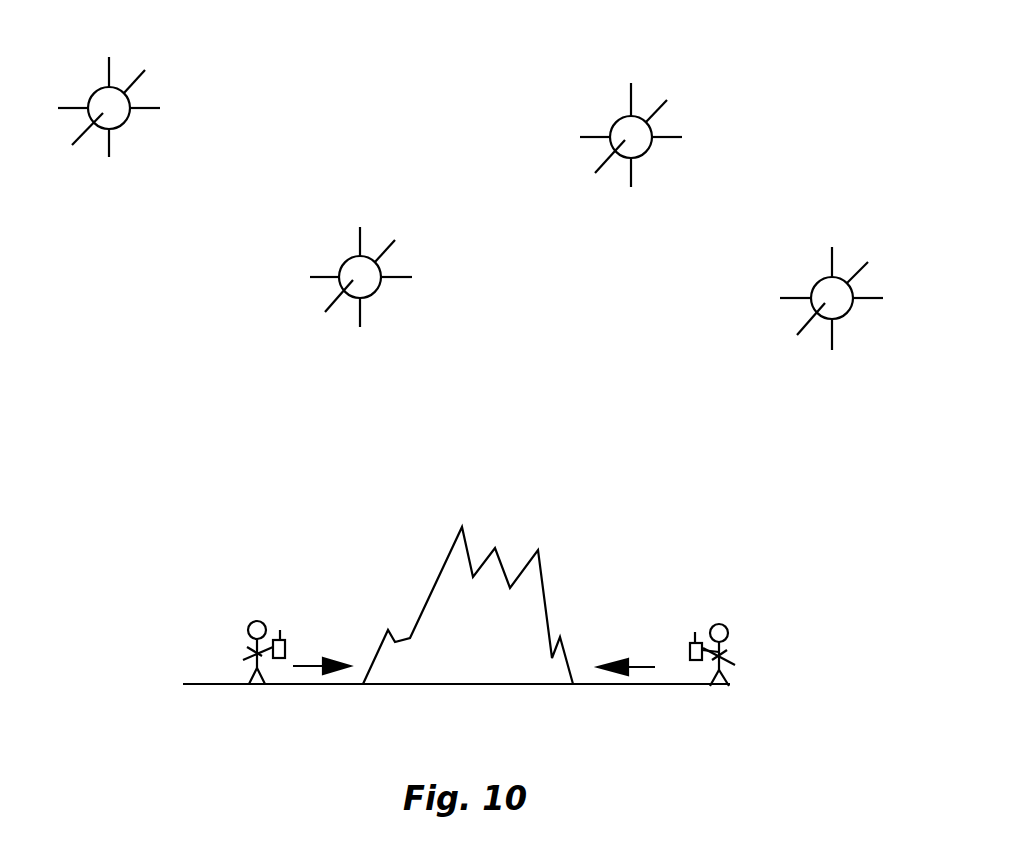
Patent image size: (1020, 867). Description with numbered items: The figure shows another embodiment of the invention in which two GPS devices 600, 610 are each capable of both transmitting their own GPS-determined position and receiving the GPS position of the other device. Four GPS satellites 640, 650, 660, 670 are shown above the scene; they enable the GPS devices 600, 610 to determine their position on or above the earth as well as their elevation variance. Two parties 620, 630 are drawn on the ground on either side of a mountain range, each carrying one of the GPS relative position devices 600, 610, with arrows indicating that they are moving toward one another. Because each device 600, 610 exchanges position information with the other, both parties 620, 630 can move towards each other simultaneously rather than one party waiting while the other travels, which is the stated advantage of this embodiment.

The GPS device 600 is at (285, 645).
The GPS device 610 is at (690, 645).
The party 620 is at (247, 628).
The party 630 is at (727, 632).
The GPS satellite 640 is at (109, 72).
The GPS satellite 650 is at (360, 240).
The GPS satellite 660 is at (631, 100).
The GPS satellite 670 is at (832, 262).